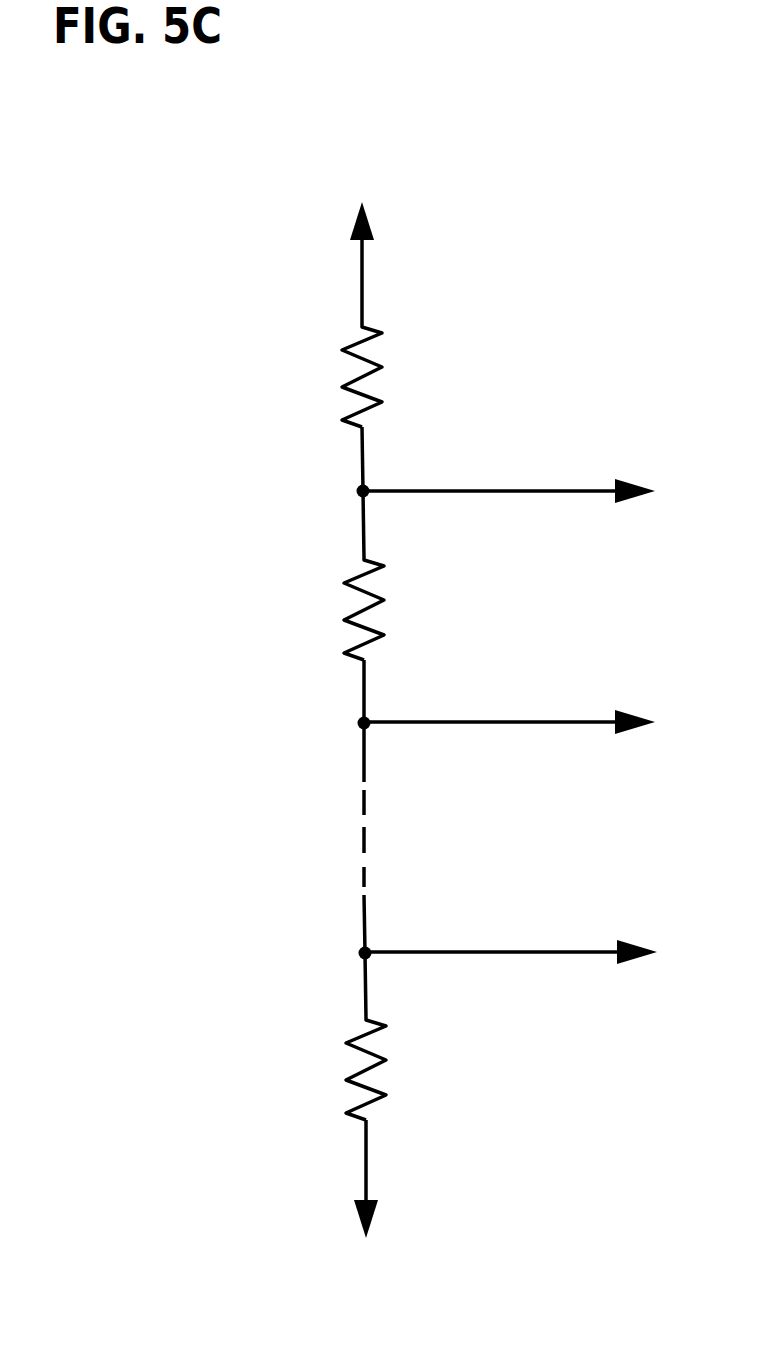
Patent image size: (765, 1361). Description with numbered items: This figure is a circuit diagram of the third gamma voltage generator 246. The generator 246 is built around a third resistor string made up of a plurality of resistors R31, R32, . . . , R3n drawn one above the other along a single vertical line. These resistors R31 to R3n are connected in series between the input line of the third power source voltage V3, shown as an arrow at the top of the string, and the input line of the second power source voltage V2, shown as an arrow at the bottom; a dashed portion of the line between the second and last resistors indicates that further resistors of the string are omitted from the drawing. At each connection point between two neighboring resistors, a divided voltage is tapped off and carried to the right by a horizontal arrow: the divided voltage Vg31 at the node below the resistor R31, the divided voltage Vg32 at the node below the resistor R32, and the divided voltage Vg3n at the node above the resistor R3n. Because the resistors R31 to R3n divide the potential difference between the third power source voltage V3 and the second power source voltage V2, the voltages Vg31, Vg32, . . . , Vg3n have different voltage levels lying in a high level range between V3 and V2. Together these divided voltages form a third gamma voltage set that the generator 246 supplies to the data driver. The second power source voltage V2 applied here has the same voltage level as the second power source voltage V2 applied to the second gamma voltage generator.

The third gamma voltage generator 246 is at (653, 141).
The resistor R31 is at (301, 376).
The resistor R32 is at (303, 607).
The resistor R3n is at (304, 1067).
The divided voltage Vg31 is at (506, 463).
The divided voltage Vg32 is at (507, 694).
The divided voltage Vg3n is at (508, 924).
The third power source voltage V3 is at (358, 229).
The second power source voltage V2 is at (370, 1212).